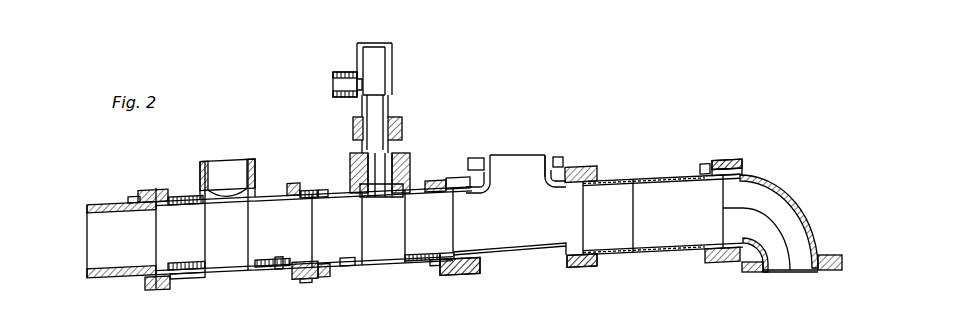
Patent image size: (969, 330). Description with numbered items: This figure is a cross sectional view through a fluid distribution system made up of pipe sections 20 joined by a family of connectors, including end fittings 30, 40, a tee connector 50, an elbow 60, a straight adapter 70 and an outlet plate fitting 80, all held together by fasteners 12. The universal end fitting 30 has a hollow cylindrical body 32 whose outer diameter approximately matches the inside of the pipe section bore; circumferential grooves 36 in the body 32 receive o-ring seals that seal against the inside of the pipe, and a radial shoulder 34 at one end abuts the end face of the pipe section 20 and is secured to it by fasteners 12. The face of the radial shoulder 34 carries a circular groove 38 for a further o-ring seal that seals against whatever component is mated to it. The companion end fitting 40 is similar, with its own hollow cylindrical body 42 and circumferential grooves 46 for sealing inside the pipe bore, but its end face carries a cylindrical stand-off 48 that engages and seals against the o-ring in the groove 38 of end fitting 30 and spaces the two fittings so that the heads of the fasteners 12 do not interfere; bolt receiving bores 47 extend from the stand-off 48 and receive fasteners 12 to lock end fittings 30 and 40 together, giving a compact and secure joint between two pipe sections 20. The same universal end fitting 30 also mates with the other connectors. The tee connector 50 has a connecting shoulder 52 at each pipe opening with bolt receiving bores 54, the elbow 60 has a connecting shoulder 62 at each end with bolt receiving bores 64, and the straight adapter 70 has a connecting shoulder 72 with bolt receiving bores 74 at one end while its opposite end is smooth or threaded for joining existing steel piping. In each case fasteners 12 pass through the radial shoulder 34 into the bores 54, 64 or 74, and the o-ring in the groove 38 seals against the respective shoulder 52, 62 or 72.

The fastener 12 is at (597, 174).
The pipe section 20 is at (397, 63).
The end fitting 30 is at (161, 195).
The hollow cylindrical body 32 is at (438, 264).
The radial shoulder 34 is at (450, 272).
The circumferential groove 36 is at (427, 188).
The circular groove 38 is at (323, 190).
The end fitting 40 is at (250, 163).
The hollow cylindrical body 42 is at (277, 264).
The circumferential groove 46 is at (273, 264).
The bolt receiving bore 47 is at (310, 282).
The cylindrical stand-off 48 is at (298, 282).
The tee connector 50 is at (506, 143).
The connecting shoulder 52 is at (547, 155).
The bolt receiving bore 54 is at (560, 158).
The elbow 60 is at (790, 198).
The connecting shoulder 62 is at (740, 162).
The bolt receiving bore 64 is at (742, 176).
The straight adapter 70 is at (123, 200).
The connecting shoulder 72 is at (152, 195).
The bolt receiving bore 74 is at (146, 198).
The outlet plate fitting 80 is at (337, 72).